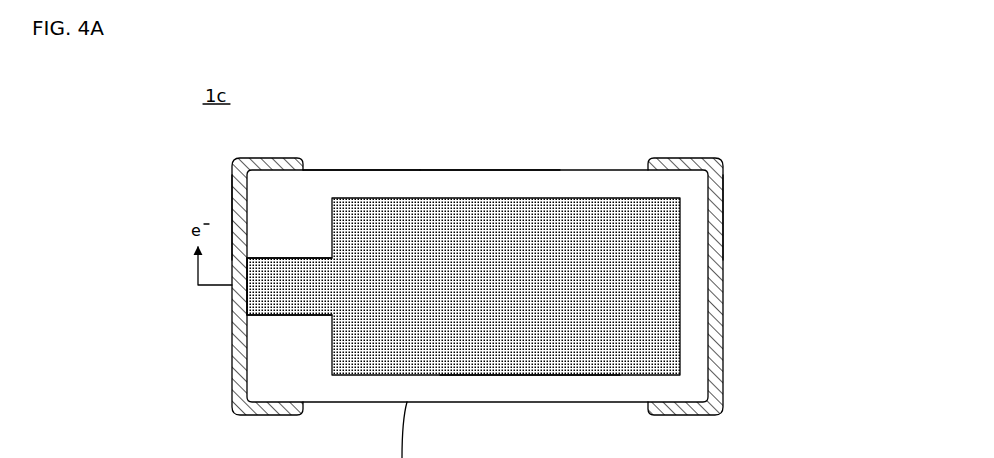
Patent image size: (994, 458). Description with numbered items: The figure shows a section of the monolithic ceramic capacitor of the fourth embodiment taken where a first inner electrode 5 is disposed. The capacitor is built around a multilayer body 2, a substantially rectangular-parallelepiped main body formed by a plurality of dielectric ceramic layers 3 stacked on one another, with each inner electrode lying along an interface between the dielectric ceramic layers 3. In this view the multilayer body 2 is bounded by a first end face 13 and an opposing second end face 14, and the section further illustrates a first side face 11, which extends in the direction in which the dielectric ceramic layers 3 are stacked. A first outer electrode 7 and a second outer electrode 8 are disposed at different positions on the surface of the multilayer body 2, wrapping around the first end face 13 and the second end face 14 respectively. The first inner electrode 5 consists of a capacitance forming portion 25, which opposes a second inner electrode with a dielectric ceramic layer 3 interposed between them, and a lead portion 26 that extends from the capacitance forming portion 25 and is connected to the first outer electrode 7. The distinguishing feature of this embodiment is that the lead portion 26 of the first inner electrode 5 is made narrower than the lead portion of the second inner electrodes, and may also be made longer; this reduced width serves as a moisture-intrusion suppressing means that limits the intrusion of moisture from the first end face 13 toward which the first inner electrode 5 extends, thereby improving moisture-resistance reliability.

The multilayer body 2 is at (537, 166).
The dielectric ceramic layer 3 is at (475, 174).
The first inner electrode 5 is at (437, 196).
The first outer electrode 7 is at (232, 367).
The second outer electrode 8 is at (722, 310).
The first side face 11 is at (363, 168).
The first end face 13 is at (240, 193).
The second end face 14 is at (722, 222).
The capacitance forming portion 25 is at (530, 365).
The lead portion 26 is at (320, 303).